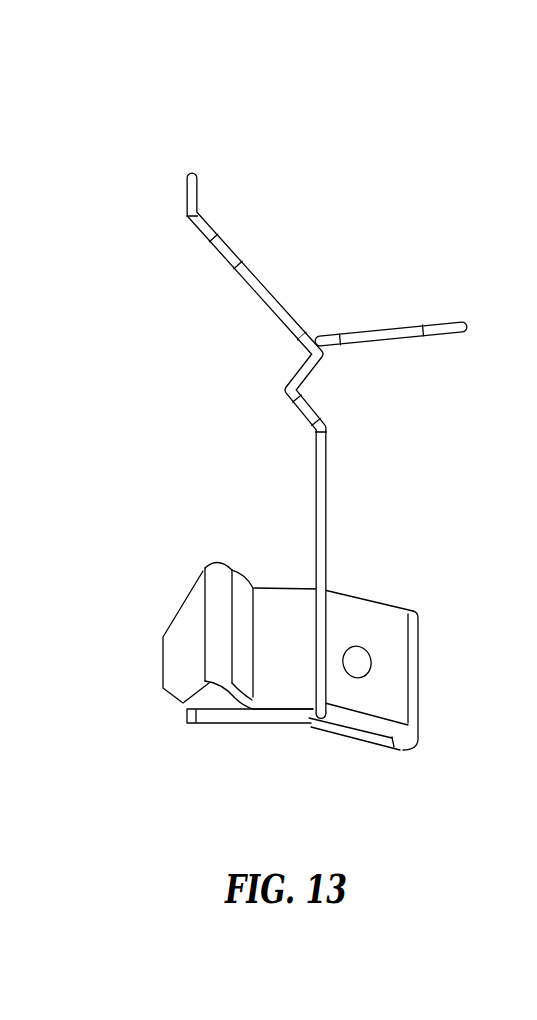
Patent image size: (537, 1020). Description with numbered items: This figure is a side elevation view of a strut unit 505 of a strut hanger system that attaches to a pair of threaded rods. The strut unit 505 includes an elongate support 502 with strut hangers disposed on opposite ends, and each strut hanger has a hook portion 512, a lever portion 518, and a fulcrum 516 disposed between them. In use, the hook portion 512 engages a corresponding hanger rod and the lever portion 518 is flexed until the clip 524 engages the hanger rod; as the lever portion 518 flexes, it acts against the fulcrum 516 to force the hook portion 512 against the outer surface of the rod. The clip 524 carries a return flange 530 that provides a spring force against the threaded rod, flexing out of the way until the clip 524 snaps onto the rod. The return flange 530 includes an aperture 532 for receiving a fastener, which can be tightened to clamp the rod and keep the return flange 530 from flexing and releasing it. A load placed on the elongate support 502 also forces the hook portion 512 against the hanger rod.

The strut unit 505 is at (357, 132).
The elongate support 502 is at (418, 313).
The hook portion 512 is at (228, 237).
The fulcrum 516 is at (275, 387).
The lever portion 518 is at (333, 468).
The return flange 530 is at (395, 583).
The aperture 532 is at (357, 660).
The clip 524 is at (262, 760).